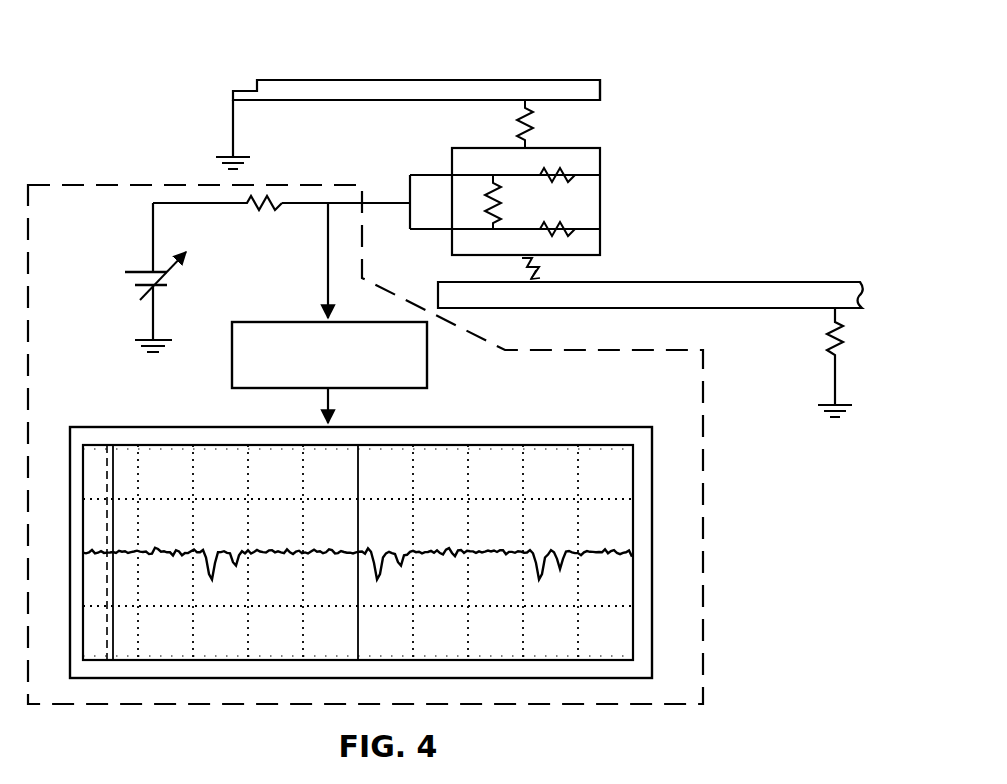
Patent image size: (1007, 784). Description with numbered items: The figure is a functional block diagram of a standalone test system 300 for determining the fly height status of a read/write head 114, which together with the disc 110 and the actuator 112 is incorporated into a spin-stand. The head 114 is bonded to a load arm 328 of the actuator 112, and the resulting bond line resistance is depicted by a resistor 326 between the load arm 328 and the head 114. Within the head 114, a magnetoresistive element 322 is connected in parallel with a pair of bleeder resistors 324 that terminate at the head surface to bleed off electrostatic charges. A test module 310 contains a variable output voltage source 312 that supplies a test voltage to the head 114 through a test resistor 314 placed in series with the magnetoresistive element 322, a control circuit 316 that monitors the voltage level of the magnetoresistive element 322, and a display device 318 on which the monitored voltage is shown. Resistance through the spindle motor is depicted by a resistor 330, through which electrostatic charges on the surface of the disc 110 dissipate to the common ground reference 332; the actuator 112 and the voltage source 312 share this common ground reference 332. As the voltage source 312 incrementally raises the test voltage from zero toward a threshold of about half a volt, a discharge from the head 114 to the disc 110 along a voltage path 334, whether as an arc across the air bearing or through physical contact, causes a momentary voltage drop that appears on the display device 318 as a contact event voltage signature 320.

The disc 110 is at (795, 282).
The actuator 112 is at (482, 66).
The read/write head 114 is at (600, 255).
The standalone test system 300 is at (346, 53).
The test module 310 is at (726, 563).
The variable output voltage source 312 is at (134, 258).
The test resistor 314 is at (250, 212).
The control circuit 316 is at (232, 360).
The display device 318 is at (70, 462).
The contact event voltage signature 320 is at (585, 551).
The magnetoresistive element 322 is at (486, 208).
The bleeder resistors 324 is at (548, 224).
The bond line resistance resistor 326 is at (530, 126).
The load arm 328 is at (576, 80).
The spindle motor resistance resistor 330 is at (829, 345).
The common ground reference 332 is at (233, 150).
The voltage path 334 is at (512, 272).